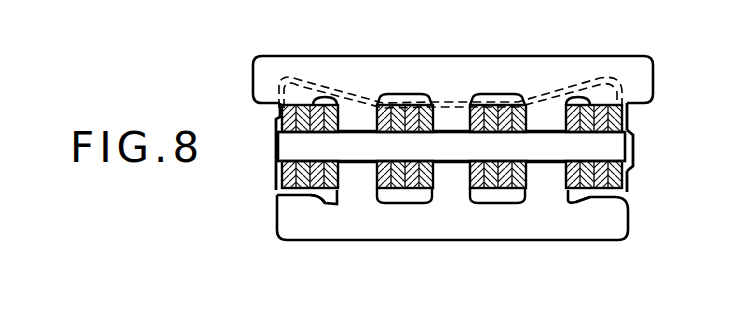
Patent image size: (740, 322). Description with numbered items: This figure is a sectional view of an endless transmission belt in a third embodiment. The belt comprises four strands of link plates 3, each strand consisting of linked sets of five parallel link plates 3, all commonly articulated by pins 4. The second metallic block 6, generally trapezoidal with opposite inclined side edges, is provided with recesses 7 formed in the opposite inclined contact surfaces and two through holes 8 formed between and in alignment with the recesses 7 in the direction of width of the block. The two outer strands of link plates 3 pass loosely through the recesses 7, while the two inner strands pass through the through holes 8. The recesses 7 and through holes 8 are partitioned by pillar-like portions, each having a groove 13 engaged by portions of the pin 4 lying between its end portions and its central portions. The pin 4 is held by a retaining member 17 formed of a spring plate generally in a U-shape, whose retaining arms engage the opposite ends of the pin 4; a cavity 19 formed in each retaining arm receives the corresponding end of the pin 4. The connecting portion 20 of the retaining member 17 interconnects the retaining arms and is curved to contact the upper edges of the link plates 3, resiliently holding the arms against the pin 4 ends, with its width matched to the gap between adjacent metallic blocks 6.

The link plate 3 is at (484, 190).
The pin 4 is at (297, 150).
The second metallic block 6 is at (540, 55).
The recess 7 is at (326, 197).
The through hole 8 is at (404, 201).
The groove 13 is at (361, 164).
The retaining member 17 is at (270, 113).
The cavity 19 is at (634, 150).
The connecting portion 20 is at (414, 100).